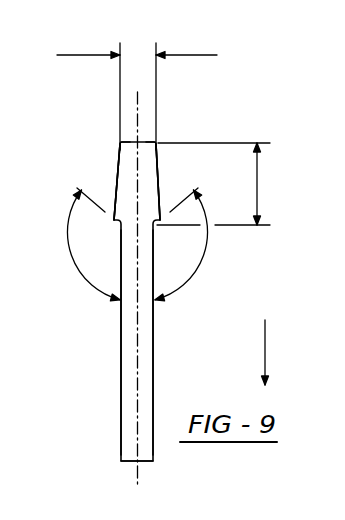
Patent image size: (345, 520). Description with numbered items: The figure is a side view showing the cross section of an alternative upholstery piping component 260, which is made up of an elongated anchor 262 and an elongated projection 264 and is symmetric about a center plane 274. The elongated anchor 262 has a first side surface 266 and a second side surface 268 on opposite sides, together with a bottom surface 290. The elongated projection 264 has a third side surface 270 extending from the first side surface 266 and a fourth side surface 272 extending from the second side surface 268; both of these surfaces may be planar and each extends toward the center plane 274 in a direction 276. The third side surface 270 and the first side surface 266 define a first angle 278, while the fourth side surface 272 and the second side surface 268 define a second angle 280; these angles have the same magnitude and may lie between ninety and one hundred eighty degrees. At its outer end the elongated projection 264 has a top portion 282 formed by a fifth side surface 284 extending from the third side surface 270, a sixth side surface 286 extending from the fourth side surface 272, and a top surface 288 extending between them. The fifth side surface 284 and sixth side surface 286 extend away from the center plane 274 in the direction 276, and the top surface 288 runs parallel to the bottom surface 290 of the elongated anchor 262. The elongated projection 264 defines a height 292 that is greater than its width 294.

The upholstery piping component 260 is at (177, 261).
The elongated anchor 262 is at (119, 391).
The elongated projection 264 is at (109, 190).
The first side surface 266 is at (121, 336).
The second side surface 268 is at (153, 345).
The third side surface 270 is at (95, 224).
The fourth side surface 272 is at (180, 228).
The center plane 274 is at (138, 476).
The direction 276 is at (265, 347).
The first angle 278 is at (76, 266).
The second angle 280 is at (191, 276).
The top portion 282 is at (118, 140).
The fifth side surface 284 is at (115, 166).
The sixth side surface 286 is at (161, 176).
The top surface 288 is at (157, 140).
The bottom surface 290 is at (126, 462).
The height 292 is at (258, 198).
The width 294 is at (80, 54).